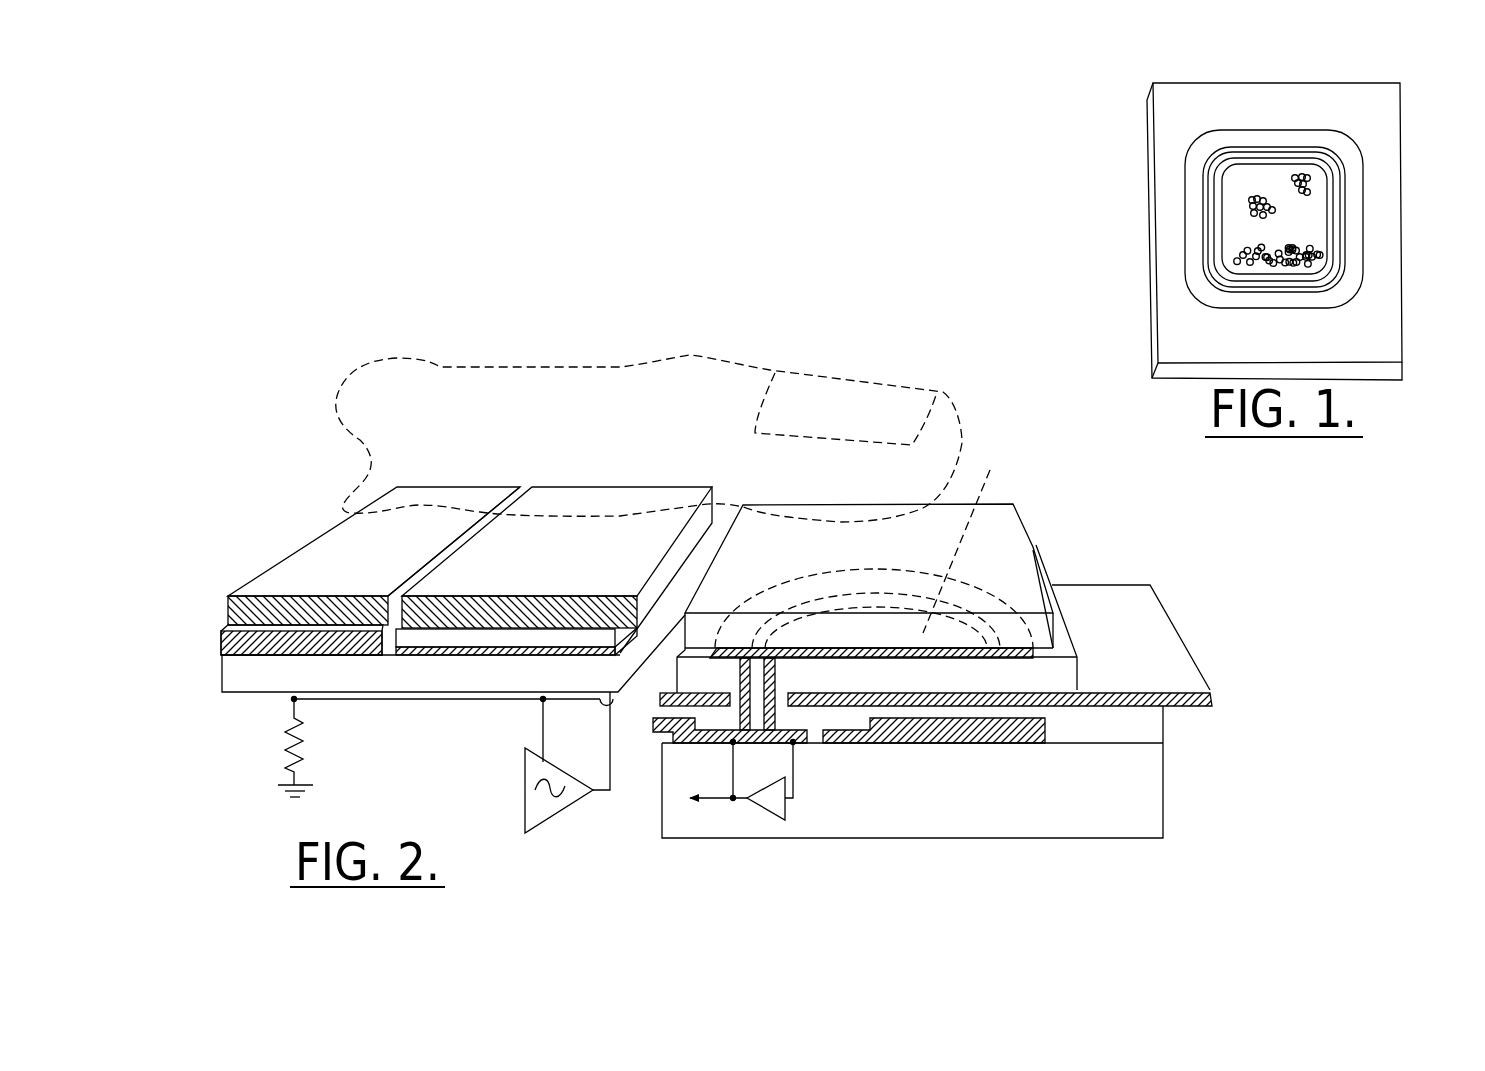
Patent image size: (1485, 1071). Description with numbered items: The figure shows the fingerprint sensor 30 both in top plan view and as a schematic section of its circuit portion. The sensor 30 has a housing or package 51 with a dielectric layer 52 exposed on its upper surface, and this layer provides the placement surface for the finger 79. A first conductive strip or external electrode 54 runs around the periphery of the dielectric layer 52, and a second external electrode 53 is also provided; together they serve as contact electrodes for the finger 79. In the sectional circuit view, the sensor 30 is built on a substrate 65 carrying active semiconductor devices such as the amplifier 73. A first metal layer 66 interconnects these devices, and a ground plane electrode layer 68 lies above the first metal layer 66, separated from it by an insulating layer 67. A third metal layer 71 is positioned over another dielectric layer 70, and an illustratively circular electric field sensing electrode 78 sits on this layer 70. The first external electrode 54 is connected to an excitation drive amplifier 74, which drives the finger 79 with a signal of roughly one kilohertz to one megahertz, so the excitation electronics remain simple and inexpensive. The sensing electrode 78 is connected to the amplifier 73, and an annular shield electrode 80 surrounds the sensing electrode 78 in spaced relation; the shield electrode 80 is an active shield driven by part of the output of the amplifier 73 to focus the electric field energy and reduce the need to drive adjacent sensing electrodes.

In FIG. 1, the fingerprint sensor 30 is at (1259, 218).
In FIG. 2, the fingerprint sensor 30 is at (708, 584).
In FIG. 1, the housing or package 51 is at (1150, 235).
In FIG. 1, the dielectric layer 52 is at (1343, 210).
In FIG. 2, the dielectric layer 52 is at (871, 586).
In FIG. 1, the second external electrode 53 is at (1324, 219).
In FIG. 2, the second external electrode 53 is at (357, 556).
In FIG. 1, the first conductive strip or external electrode 54 is at (1285, 171).
In FIG. 2, the first conductive strip or external electrode 54 is at (490, 612).
In FIG. 2, the substrate 65 is at (944, 790).
In FIG. 2, the first metal layer 66 is at (836, 746).
In FIG. 2, the insulating layer 67 is at (943, 731).
In FIG. 2, the ground plane electrode layer 68 is at (963, 691).
In FIG. 2, the dielectric layer 70 is at (716, 618).
In FIG. 2, the third metal layer 71 is at (648, 629).
In FIG. 2, the amplifier 73 is at (761, 809).
In FIG. 2, the excitation drive amplifier 74 is at (467, 791).
In FIG. 2, the electric field sensing electrode 78 is at (978, 544).
In FIG. 2, the finger 79 is at (649, 421).
In FIG. 2, the shield electrode 80 is at (908, 586).